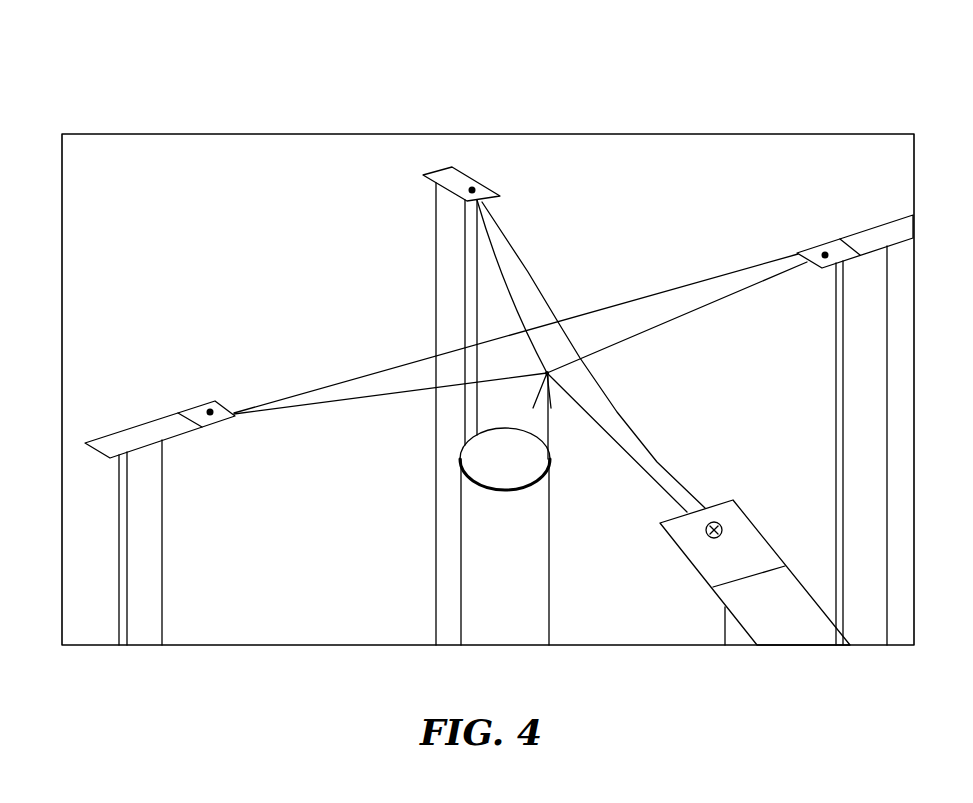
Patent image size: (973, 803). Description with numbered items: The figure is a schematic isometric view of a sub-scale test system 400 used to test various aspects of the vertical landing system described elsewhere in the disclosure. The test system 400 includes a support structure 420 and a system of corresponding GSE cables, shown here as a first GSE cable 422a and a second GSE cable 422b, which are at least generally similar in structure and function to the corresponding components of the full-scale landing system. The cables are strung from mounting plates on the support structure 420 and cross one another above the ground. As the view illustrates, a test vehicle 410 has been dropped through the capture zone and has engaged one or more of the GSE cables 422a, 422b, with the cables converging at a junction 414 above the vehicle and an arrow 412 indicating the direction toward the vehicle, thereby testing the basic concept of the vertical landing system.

The sub-scale test system 400 is at (887, 99).
The test vehicle 410 is at (549, 580).
The upward tension indicator 412 is at (545, 438).
The cable junction connector 414 is at (538, 390).
The support structure 420 is at (836, 380).
The GSE cable 422a is at (530, 270).
The GSE cable 422b is at (348, 377).